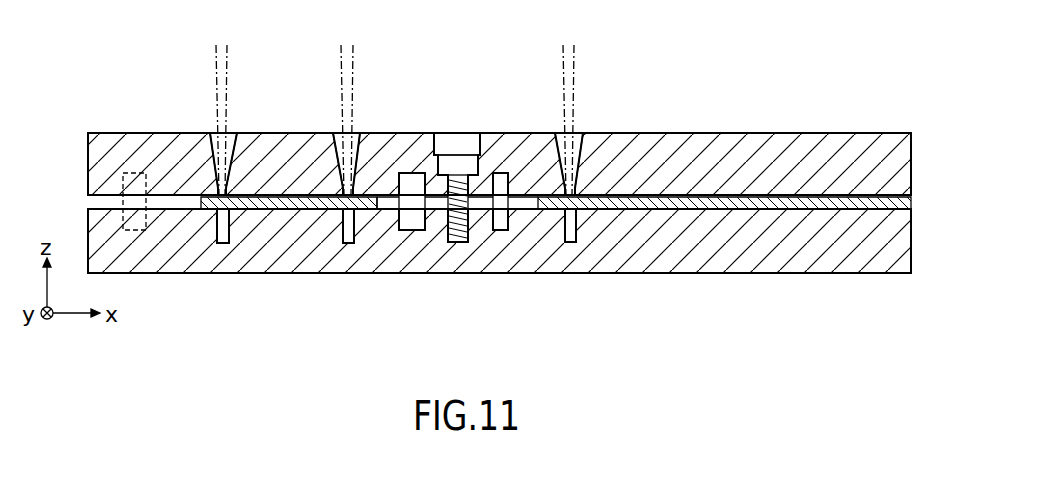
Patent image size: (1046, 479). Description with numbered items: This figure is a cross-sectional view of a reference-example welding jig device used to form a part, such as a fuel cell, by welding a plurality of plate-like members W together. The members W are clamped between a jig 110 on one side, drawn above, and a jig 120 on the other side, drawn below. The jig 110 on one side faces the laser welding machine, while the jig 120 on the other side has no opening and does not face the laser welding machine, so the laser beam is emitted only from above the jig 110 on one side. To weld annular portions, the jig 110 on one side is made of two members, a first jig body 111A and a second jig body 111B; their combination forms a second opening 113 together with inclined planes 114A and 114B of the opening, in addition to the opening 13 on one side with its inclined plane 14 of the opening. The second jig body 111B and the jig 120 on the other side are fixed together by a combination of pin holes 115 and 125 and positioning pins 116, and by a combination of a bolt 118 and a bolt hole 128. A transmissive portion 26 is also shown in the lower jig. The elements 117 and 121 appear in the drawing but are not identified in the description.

The jig on one side 110 is at (817, 117).
The jig on the other side 120 is at (815, 285).
The lower die body 121 is at (755, 250).
The first jig body 111A is at (713, 147).
The second jig body 111B is at (517, 133).
The plate-like members W is at (688, 210).
The positioning pins 116 is at (393, 208).
The sensor (hidden) 117 is at (131, 173).
The inclined plane of the opening 14 is at (230, 160).
The opening on one side 13 is at (220, 188).
The second opening 113 is at (590, 136).
The inclined plane of the opening 114A is at (577, 133).
The inclined plane of the opening 114B is at (562, 133).
The transmissive portion 26 is at (222, 243).
The pin hole 115 is at (435, 210).
The pin hole 125 is at (414, 230).
The bolt 118 is at (455, 160).
The bolt hole 128 is at (458, 242).